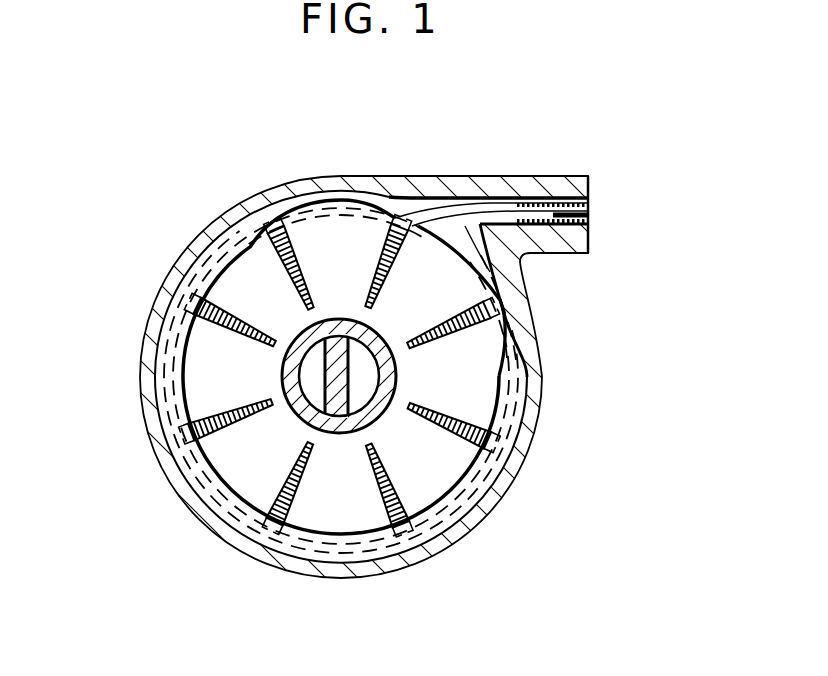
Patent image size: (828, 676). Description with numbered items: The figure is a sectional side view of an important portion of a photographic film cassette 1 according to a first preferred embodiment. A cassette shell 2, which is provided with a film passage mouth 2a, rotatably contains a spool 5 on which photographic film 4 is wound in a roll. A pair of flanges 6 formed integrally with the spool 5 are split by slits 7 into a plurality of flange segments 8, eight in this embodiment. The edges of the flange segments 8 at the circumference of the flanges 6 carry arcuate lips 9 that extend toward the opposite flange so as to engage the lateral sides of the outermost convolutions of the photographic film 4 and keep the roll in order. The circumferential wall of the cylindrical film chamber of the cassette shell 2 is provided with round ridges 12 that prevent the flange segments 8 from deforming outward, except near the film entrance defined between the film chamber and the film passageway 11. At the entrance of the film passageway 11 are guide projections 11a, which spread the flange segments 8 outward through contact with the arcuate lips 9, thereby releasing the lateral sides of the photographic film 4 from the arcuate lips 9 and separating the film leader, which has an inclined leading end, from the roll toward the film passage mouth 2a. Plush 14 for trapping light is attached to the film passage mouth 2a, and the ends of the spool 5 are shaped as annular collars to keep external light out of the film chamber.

The photographic film cassette 1 is at (457, 547).
The cassette shell 2 is at (253, 566).
The film passage mouth 2a is at (594, 222).
The photographic film 4 is at (478, 197).
The spool 5 is at (397, 374).
The flanges 6 is at (498, 290).
The slits 7 is at (468, 418).
The flange segments 8 is at (233, 283).
The arcuate lips 9 is at (184, 510).
The film passageway 11 is at (500, 205).
The guide projections 11a is at (458, 235).
The round ridges 12 is at (170, 384).
The plush 14 is at (593, 207).